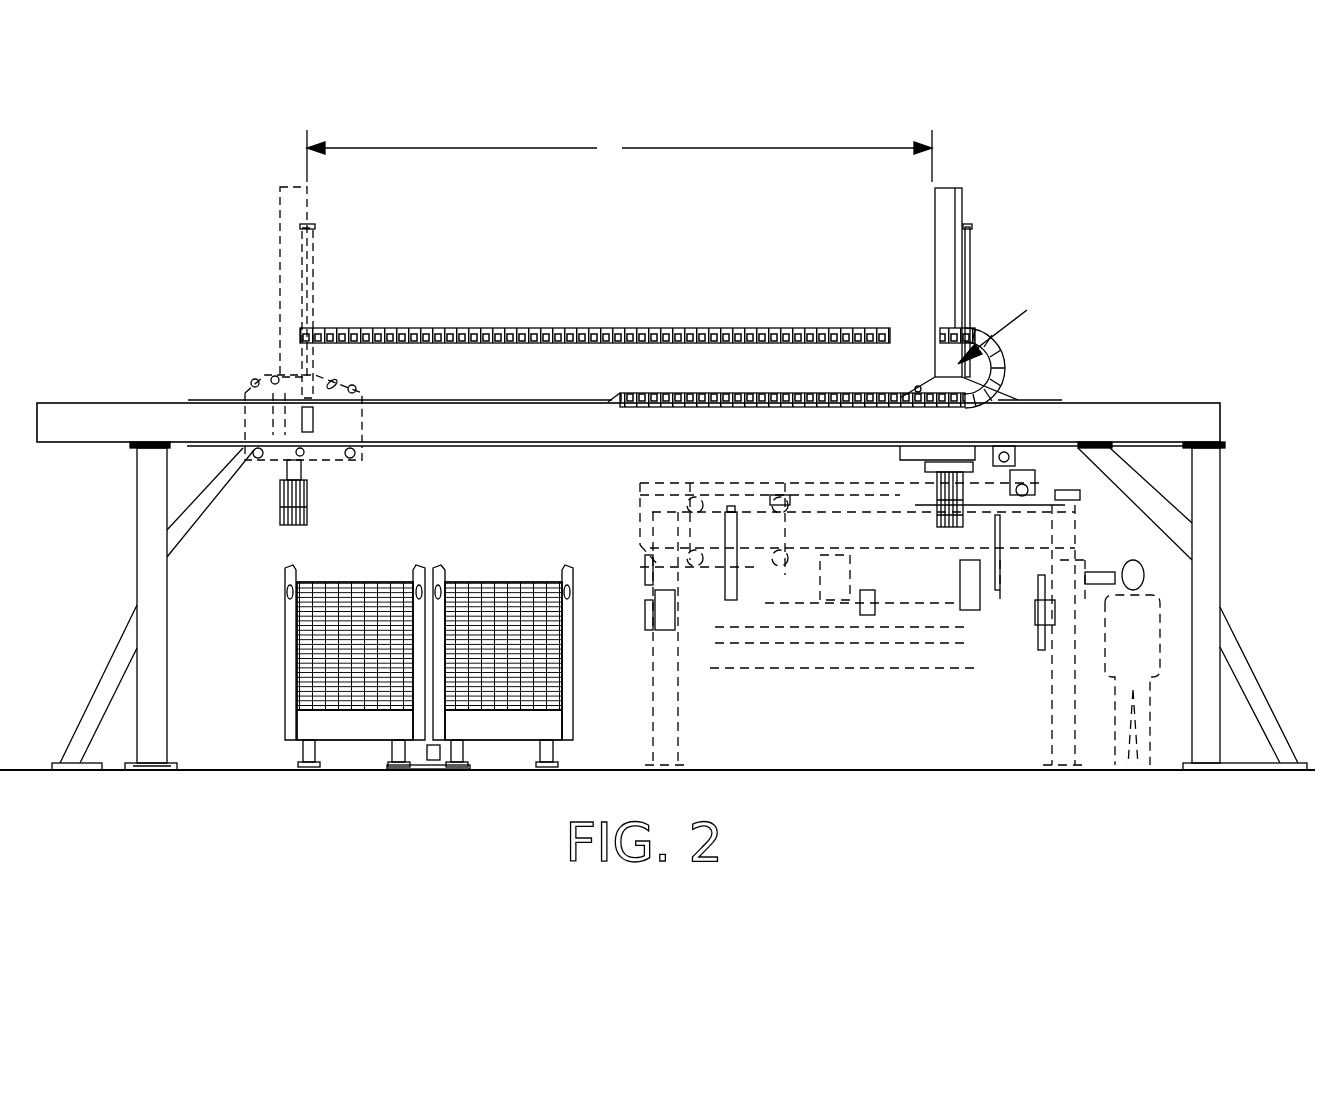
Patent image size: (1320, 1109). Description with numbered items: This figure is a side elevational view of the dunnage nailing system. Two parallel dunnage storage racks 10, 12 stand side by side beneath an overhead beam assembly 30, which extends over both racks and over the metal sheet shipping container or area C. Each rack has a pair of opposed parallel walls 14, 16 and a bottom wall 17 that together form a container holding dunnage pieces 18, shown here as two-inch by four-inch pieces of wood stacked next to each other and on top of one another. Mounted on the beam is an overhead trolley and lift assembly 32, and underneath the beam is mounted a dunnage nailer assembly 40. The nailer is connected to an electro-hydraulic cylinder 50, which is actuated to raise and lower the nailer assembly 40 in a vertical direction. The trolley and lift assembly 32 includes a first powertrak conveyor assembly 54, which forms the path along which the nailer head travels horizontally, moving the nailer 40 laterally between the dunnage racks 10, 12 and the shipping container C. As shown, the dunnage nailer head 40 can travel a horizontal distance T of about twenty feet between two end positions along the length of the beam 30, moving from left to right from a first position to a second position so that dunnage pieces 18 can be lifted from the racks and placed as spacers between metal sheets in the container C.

The dunnage storage rack 10 is at (316, 641).
The dunnage storage rack 12 is at (575, 712).
The wall 14 is at (285, 585).
The wall 16 is at (425, 565).
The bottom wall 17 is at (360, 725).
The dunnage pieces 18 is at (305, 680).
The overhead beam assembly 30 is at (450, 410).
The overhead trolley and lift assembly 32 is at (1006, 325).
The dunnage nailer assembly 40 is at (972, 470).
The electro-hydraulic cylinder 50 is at (970, 245).
The powertrak conveyor assembly 54 is at (1010, 359).
The shipping container or area C is at (610, 489).
The horizontal distance T is at (619, 156).